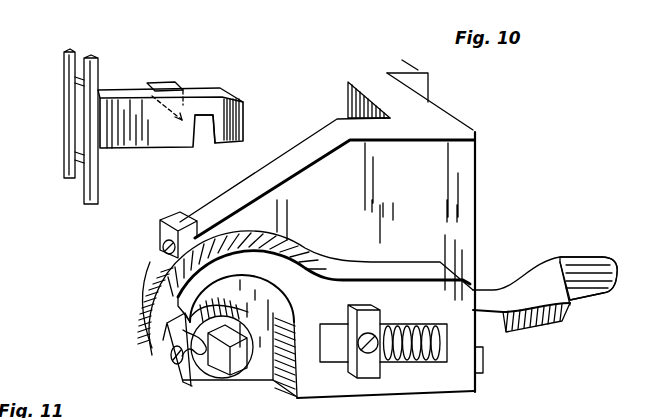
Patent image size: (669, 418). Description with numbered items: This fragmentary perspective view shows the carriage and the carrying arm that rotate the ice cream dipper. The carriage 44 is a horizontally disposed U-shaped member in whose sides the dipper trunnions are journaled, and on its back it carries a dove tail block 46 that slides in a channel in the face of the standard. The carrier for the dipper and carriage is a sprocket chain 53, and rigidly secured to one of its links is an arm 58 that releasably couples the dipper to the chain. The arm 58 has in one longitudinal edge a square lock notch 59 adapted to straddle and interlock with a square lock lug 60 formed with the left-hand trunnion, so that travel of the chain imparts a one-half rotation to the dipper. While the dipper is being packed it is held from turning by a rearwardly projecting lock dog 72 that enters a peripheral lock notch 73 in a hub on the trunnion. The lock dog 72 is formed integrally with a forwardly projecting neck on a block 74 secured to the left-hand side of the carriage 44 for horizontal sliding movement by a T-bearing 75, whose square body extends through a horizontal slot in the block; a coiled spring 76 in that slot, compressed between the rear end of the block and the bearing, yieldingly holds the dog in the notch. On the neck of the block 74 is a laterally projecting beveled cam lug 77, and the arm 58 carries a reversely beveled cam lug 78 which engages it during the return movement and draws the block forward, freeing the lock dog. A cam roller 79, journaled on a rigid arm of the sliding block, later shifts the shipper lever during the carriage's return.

The carriage 44 is at (460, 192).
The dove tail block 46 is at (414, 67).
The sprocket chain 53 is at (88, 123).
The arm 58 is at (180, 140).
The lock notch 59 is at (208, 134).
The lock lug 60 is at (237, 367).
The lock dog 72 is at (180, 347).
The lock notch 73 is at (185, 370).
The block 74 is at (397, 272).
The T-bearing 75 is at (343, 343).
The coiled spring 76 is at (425, 325).
The cam lug 77 is at (190, 320).
The cam lug 78 is at (171, 79).
The cam roller 79 is at (573, 263).